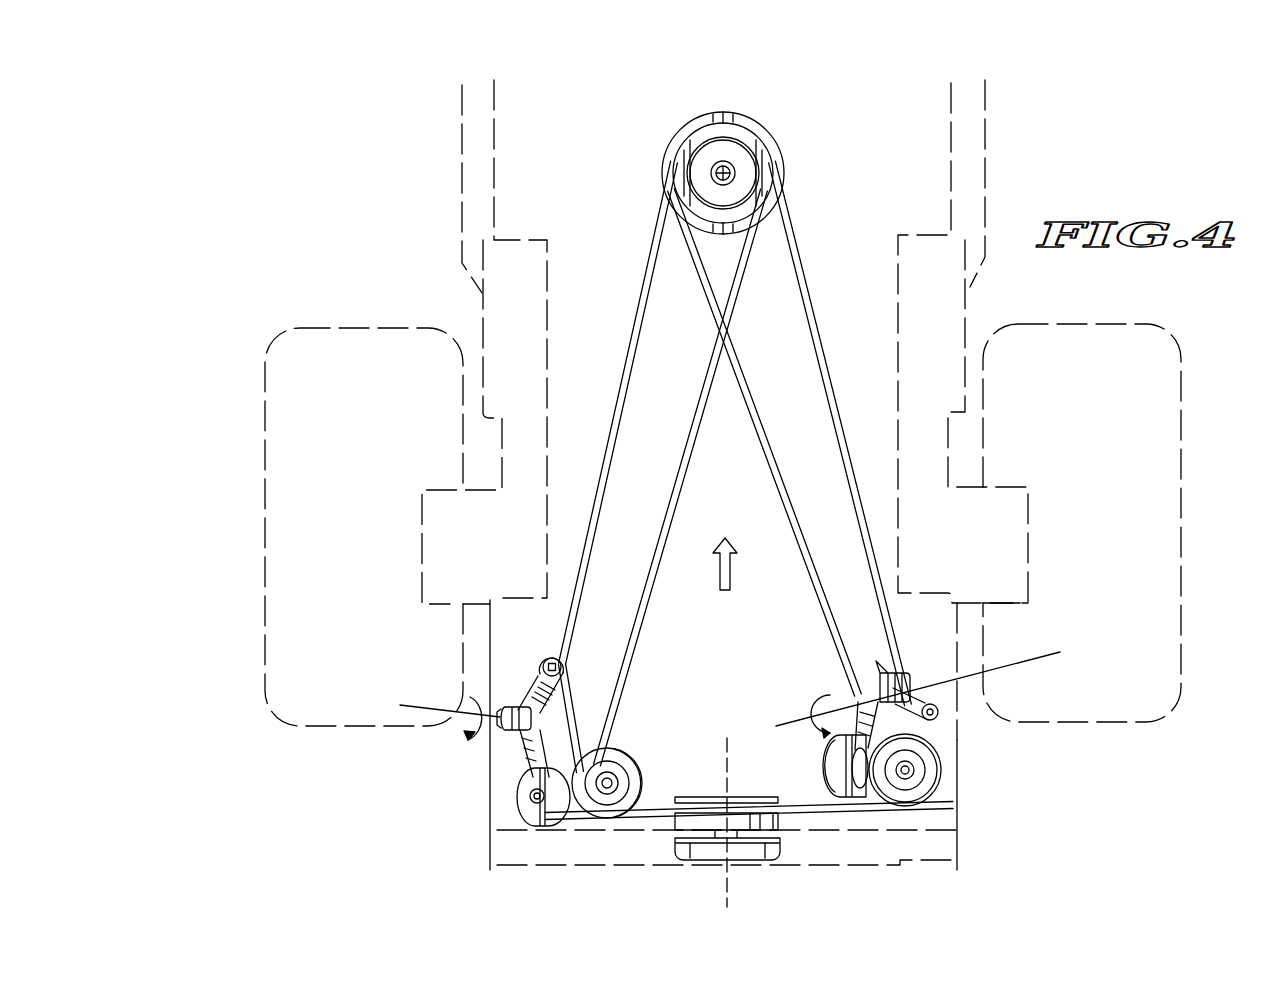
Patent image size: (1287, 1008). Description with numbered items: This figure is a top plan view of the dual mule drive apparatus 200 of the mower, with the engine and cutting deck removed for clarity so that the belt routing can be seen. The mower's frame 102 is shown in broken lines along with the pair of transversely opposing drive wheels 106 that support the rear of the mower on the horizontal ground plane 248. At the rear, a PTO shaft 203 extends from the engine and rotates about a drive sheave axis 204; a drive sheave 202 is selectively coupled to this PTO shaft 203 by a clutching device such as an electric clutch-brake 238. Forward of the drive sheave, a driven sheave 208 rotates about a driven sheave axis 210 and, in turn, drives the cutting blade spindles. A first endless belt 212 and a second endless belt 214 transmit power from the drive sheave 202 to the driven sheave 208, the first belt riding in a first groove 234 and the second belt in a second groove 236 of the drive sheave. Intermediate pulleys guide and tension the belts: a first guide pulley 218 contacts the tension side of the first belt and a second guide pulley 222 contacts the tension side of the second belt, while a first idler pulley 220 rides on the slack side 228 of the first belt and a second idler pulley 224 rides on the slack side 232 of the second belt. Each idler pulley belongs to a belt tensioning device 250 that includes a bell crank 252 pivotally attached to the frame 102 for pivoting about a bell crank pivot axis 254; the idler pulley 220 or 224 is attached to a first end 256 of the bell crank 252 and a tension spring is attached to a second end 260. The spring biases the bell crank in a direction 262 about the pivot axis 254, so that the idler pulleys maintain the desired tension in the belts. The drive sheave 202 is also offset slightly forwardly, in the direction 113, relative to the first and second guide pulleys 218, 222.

The frame 102 is at (547, 627).
The drive wheels 106 is at (265, 386).
The forward direction 113 is at (712, 577).
The dual mule drive apparatus 200 is at (847, 218).
The drive sheave 202 is at (692, 800).
The PTO shaft 203 is at (673, 837).
The drive sheave axis 204 is at (725, 888).
The driven sheave 208 is at (772, 128).
The driven sheave axis 210 is at (718, 168).
The first endless belt 212 is at (657, 280).
The second endless belt 214 is at (835, 357).
The first guide pulley 218 is at (624, 756).
The first idler pulley 220 is at (532, 826).
The second guide pulley 222 is at (942, 769).
The second idler pulley 224 is at (823, 787).
The slack side of the first endless belt 228 is at (636, 396).
The slack side of the second endless belt 232 is at (779, 454).
The first groove 234 is at (780, 822).
The second groove 236 is at (662, 795).
The electric clutch-brake 238 is at (770, 862).
The horizontal ground plane 248 is at (318, 213).
The belt tensioning device 250 is at (913, 660).
The bell crank 252 is at (521, 758).
The bell crank pivot axis 254 is at (420, 707).
The first end of the bell crank 256 is at (533, 790).
The second end of the bell crank 260 is at (556, 657).
The biasing direction 262 is at (470, 738).